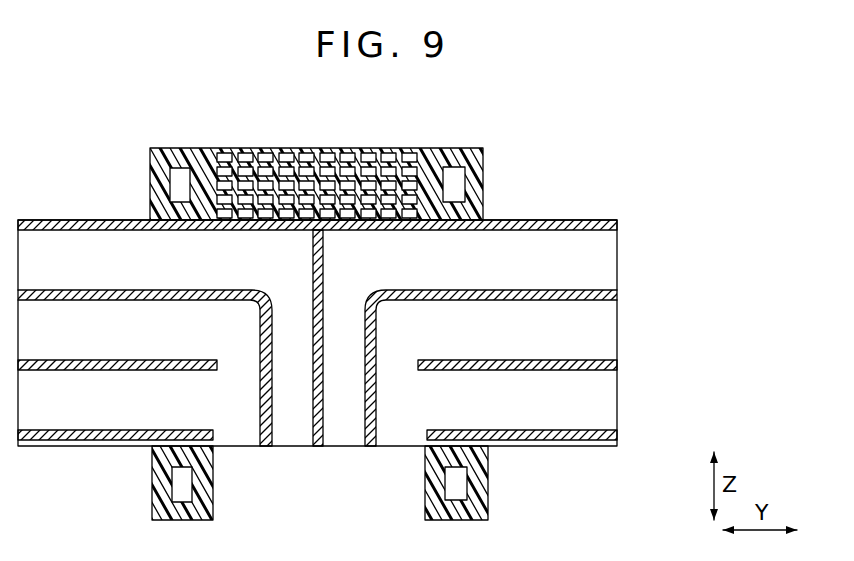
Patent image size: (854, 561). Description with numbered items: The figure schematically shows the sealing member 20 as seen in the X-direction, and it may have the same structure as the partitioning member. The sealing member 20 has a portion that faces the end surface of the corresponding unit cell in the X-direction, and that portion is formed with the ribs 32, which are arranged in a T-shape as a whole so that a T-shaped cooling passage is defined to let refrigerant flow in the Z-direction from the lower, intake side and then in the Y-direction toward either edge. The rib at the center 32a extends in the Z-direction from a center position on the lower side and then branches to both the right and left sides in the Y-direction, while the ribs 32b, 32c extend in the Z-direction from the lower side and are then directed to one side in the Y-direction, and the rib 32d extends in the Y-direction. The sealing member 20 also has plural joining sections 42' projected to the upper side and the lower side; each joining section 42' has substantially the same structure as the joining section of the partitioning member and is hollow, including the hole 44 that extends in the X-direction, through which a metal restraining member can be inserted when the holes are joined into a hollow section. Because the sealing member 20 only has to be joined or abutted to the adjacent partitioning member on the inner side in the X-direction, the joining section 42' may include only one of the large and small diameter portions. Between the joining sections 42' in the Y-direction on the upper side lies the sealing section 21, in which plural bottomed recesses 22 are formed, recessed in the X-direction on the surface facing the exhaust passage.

The sealing member 20 is at (611, 212).
The sealing section 21 is at (432, 140).
The recess 22 is at (372, 148).
The ribs 32 is at (317, 392).
The rib at the center 32a is at (313, 398).
The rib 32b is at (365, 397).
The rib 32c is at (498, 473).
The rib 32d is at (424, 372).
The joining section 42' is at (322, 336).
The hole 44 is at (178, 188).